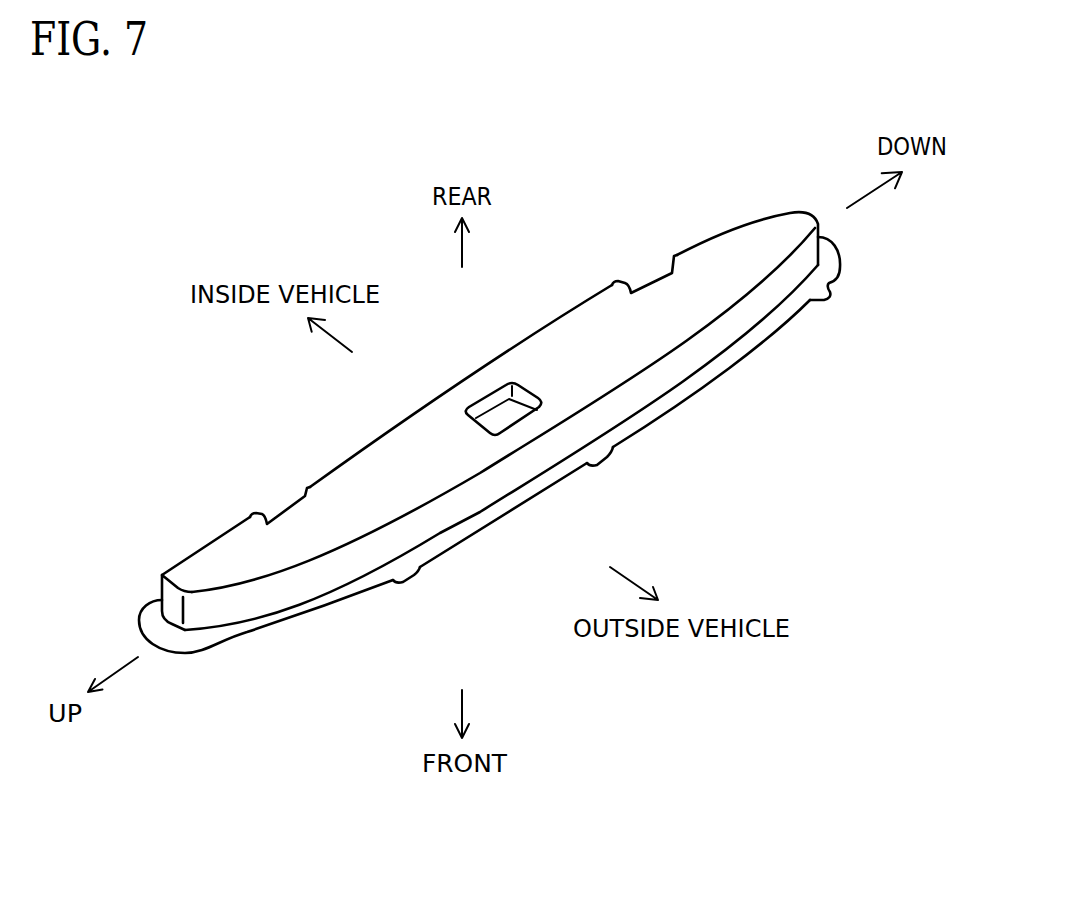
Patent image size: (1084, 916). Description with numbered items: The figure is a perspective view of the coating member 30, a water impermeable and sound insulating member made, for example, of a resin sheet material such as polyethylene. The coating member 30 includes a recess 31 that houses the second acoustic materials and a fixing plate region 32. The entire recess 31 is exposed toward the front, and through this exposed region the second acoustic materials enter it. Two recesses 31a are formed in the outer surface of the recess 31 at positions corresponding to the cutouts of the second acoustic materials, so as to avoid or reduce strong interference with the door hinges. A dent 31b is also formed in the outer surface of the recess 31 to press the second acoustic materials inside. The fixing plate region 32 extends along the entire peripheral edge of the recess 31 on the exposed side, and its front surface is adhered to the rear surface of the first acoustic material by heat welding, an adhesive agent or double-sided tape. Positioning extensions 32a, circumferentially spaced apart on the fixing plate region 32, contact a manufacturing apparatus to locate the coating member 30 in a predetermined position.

The coating member 30 is at (718, 221).
The recess 31 is at (490, 417).
The recesses 31a is at (283, 510).
The dent 31b is at (502, 413).
The fixing plate region 32 is at (501, 450).
The positioning extensions 32a is at (418, 581).